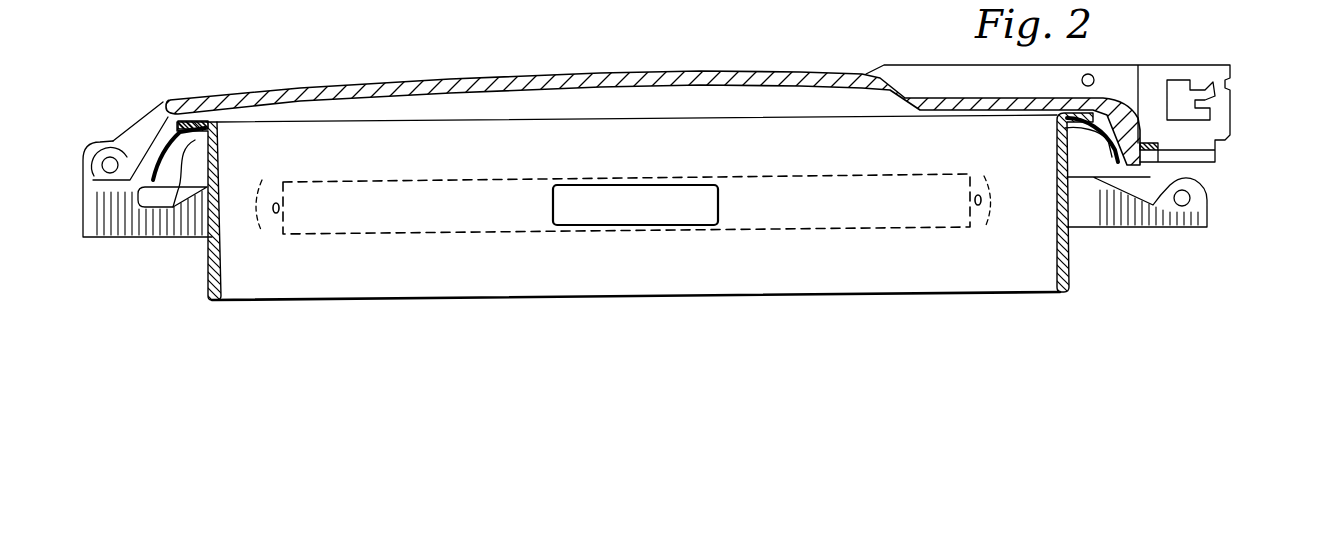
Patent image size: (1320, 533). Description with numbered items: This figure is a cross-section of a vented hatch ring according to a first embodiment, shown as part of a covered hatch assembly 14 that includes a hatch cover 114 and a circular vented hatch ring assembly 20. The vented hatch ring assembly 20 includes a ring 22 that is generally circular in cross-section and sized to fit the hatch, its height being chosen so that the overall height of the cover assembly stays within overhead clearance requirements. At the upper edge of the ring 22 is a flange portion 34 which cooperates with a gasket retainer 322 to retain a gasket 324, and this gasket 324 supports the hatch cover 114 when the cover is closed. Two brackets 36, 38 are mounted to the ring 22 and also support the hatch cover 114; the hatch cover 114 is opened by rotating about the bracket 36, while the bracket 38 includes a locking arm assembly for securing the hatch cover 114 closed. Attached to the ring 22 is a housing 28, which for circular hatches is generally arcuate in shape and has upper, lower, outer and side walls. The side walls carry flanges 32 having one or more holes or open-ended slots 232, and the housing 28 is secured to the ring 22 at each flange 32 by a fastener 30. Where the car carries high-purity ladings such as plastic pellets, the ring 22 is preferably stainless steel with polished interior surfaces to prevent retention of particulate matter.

The hatch cover 114 is at (709, 66).
The covered hatch assembly 14 is at (1235, 158).
The vented hatch ring assembly 20 is at (210, 277).
The ring 22 is at (376, 314).
The housing 28 is at (943, 228).
The fastener 30 is at (271, 208).
The flange 32 is at (262, 233).
The open-ended slot 232 is at (1028, 150).
The flange portion 34 is at (195, 121).
The bracket 36 is at (95, 232).
The bracket 38 is at (1207, 214).
The gasket retainer 322 is at (175, 222).
The gasket 324 is at (168, 118).